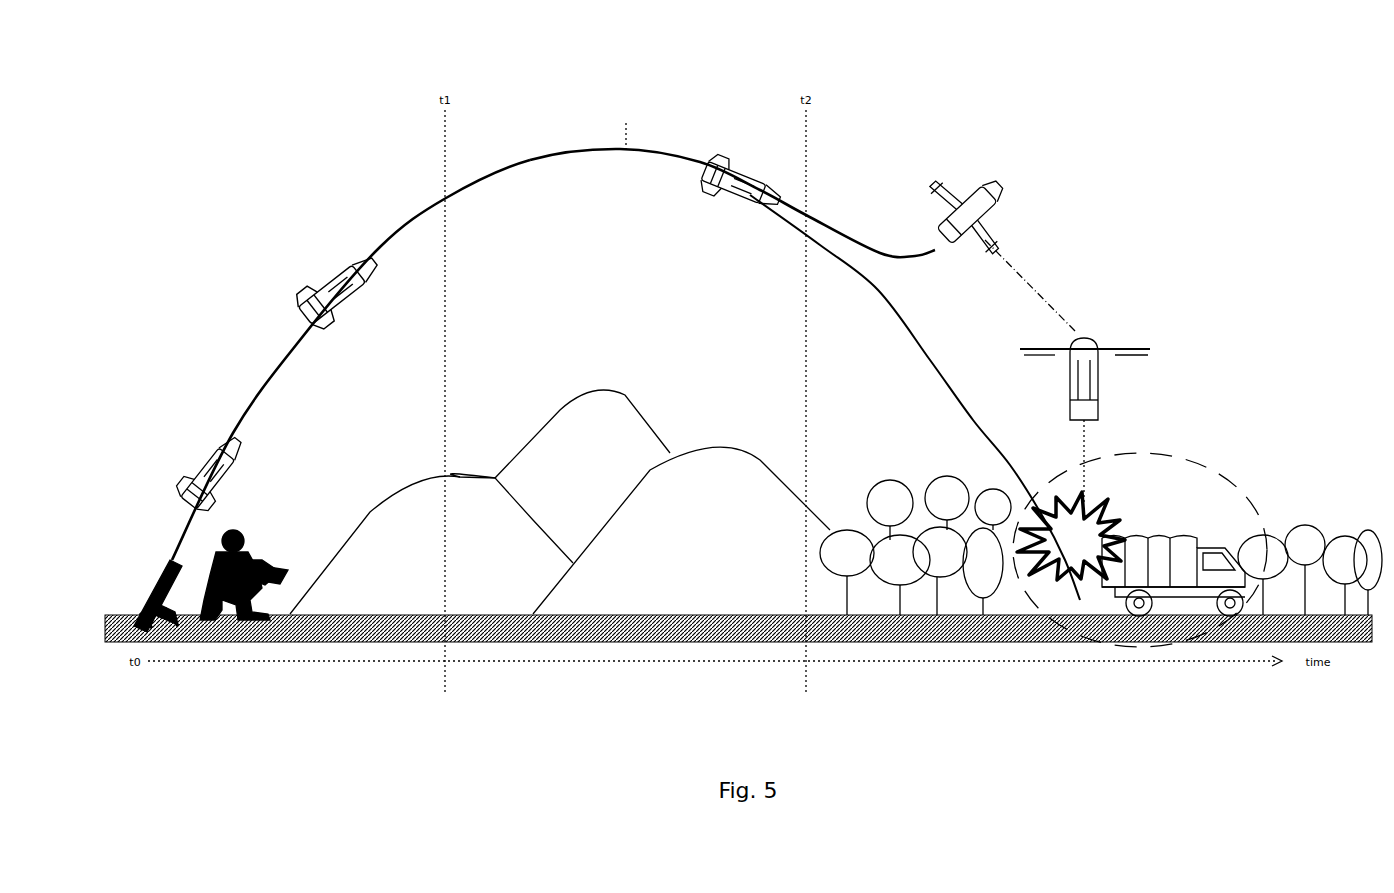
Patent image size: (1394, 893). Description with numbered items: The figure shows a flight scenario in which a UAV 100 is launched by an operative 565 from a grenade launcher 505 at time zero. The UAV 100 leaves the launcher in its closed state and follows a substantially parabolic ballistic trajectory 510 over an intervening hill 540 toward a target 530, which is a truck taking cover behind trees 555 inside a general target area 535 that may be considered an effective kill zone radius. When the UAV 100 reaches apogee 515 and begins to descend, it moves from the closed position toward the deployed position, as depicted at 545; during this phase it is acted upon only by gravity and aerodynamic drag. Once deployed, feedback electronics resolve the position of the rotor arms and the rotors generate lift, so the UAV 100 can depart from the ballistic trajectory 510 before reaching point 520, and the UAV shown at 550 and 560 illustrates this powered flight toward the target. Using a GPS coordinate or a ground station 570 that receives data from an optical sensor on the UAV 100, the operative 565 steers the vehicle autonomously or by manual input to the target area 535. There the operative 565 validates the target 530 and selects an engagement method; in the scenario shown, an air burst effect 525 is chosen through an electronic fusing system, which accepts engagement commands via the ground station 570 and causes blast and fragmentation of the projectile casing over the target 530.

The UAV 100 is at (230, 452).
The grenade launcher 505 is at (157, 577).
The ballistic trajectory 510 is at (280, 390).
The apogee 515 is at (732, 203).
The point 520 is at (875, 285).
The air burst effect 525 is at (1083, 527).
The target 530 is at (1177, 553).
The general target area 535 is at (1207, 632).
The intervening hill 540 is at (698, 470).
The UAV moving between closed and deployed position 545 is at (747, 180).
The projectile with deployed wings 550 is at (977, 210).
The trees 555 is at (943, 498).
The loitering projectile over target 560 is at (1090, 367).
The operative 565 is at (238, 528).
The ground station 570 is at (273, 567).